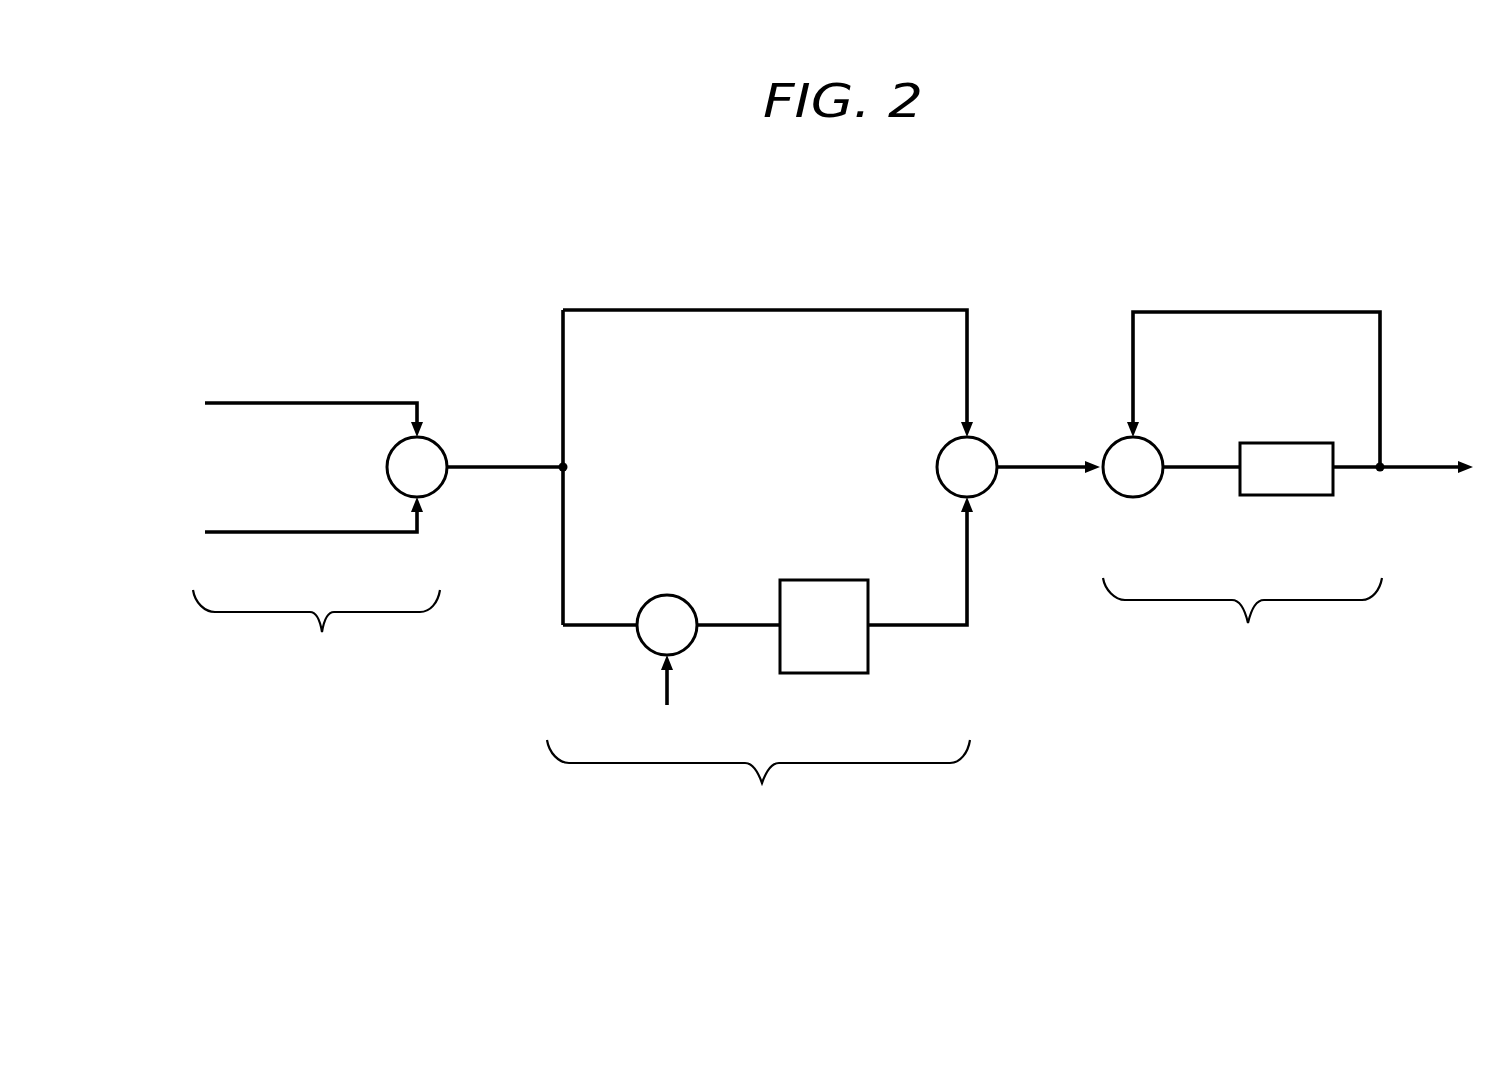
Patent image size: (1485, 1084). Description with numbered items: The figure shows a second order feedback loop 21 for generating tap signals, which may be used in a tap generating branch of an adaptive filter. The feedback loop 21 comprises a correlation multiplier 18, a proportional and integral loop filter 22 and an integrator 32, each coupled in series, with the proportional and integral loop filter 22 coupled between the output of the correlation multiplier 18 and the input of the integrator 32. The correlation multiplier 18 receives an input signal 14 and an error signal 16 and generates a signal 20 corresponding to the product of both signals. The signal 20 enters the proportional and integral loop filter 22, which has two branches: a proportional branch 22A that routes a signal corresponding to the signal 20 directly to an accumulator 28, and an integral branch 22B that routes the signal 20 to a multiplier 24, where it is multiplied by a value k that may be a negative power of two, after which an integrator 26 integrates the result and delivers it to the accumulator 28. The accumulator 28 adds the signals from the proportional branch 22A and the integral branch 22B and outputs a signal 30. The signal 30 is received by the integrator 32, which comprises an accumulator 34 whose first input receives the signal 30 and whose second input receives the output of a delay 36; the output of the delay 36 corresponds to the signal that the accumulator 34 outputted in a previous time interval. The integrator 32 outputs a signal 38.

The input signal 14 is at (297, 406).
The error signal 16 is at (297, 532).
The correlation multiplier 18 is at (422, 441).
The signal 20 is at (500, 473).
The second order feedback loop 21 is at (1288, 226).
The proportional and integral loop filter 22 is at (758, 584).
The proportional branch 22A is at (765, 309).
The integral branch 22B is at (972, 616).
The multiplier 24 is at (670, 596).
The integrator 26 is at (824, 579).
The accumulator 28 is at (941, 468).
The signal 30 is at (1042, 473).
The integrator 32 is at (1244, 500).
The accumulator 34 is at (1131, 500).
The delay 36 is at (1286, 500).
The signal 38 is at (1421, 475).